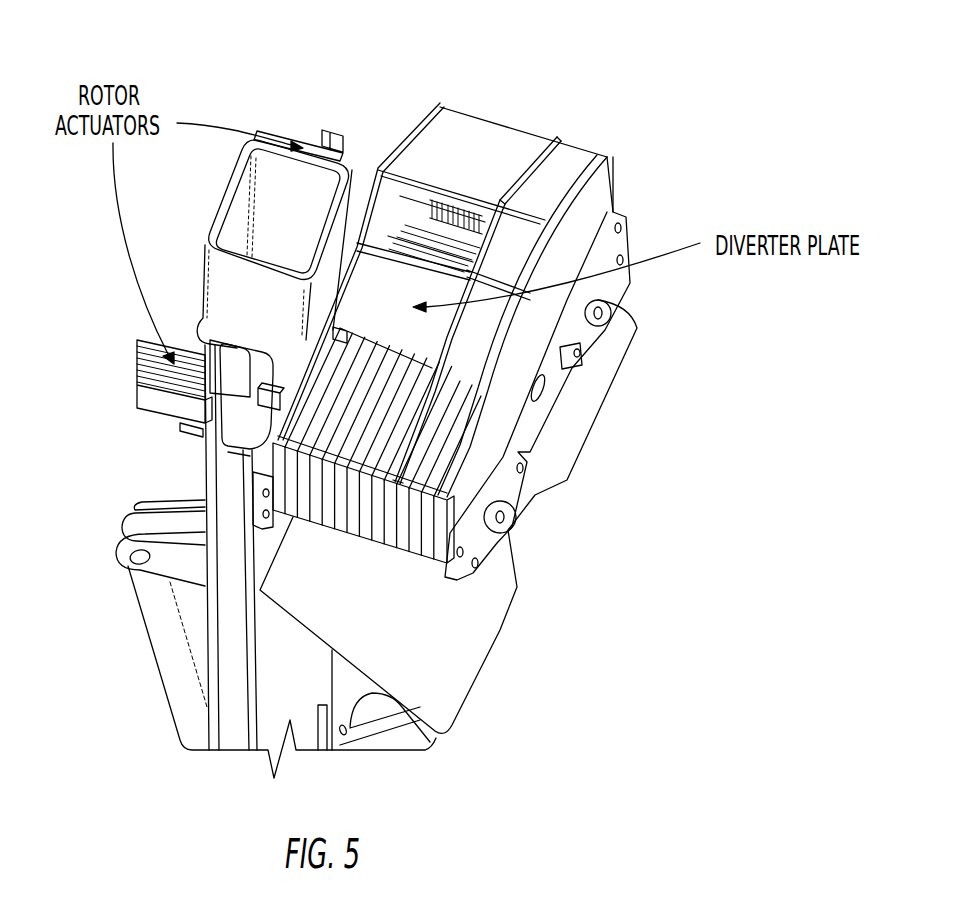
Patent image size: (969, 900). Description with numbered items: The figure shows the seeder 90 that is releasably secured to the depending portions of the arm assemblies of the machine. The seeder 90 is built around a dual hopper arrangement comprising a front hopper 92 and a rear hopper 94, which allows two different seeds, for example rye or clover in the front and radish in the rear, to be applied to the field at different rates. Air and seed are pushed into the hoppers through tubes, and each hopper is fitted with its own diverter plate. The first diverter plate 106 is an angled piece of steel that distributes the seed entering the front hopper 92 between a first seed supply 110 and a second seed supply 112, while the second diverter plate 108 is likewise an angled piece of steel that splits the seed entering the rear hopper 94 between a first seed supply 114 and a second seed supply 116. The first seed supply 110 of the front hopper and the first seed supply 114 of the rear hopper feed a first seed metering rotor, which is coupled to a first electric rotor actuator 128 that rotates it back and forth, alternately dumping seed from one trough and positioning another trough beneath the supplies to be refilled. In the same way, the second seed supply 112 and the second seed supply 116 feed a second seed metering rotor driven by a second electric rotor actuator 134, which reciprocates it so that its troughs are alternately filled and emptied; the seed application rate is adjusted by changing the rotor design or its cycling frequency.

The seeder 90 is at (640, 313).
The front hopper 92 is at (380, 330).
The rear hopper 94 is at (472, 372).
The first diverter plate 106 is at (395, 275).
The second diverter plate 108 is at (505, 295).
The first seed supply 110 is at (362, 390).
The second seed supply 112 is at (445, 262).
The first seed supply 114 is at (522, 470).
The second seed supply 116 is at (528, 262).
The first electric rotor actuator 128 is at (137, 375).
The second electric rotor actuator 134 is at (303, 138).